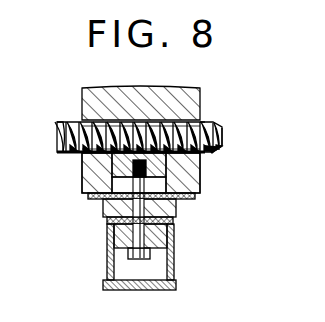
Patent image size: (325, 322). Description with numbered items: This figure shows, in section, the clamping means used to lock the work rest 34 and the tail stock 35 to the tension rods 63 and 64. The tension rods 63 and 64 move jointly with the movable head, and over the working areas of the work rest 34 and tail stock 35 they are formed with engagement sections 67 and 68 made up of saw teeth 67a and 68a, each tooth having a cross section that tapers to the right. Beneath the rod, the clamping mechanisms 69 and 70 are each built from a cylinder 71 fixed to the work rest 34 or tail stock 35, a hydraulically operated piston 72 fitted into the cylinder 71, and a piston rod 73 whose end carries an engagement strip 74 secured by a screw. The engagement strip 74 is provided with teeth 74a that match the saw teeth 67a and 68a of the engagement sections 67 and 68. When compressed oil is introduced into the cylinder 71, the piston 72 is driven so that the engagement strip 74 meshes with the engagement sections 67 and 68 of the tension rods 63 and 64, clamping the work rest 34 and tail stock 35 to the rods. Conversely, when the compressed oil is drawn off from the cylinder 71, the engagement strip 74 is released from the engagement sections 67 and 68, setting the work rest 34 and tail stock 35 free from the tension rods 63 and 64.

The work rest 34 is at (197, 102).
The tail stock 35 is at (183, 103).
The tension rod 63 is at (67, 123).
The tension rod 64 is at (114, 114).
The engagement section 67 is at (203, 134).
The engagement section 68 is at (249, 137).
The saw tooth 67a is at (210, 152).
The saw tooth 68a is at (258, 164).
The engagement strip 74 is at (91, 170).
The teeth 74a is at (196, 191).
The piston rod 73 is at (126, 208).
The piston 72 is at (116, 237).
The cylinder 71 is at (108, 274).
The clamping mechanism 69 is at (177, 238).
The clamping mechanism 70 is at (182, 248).